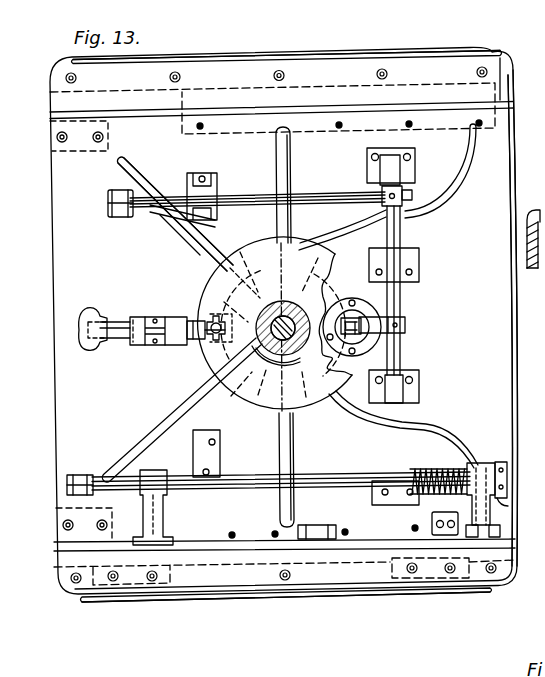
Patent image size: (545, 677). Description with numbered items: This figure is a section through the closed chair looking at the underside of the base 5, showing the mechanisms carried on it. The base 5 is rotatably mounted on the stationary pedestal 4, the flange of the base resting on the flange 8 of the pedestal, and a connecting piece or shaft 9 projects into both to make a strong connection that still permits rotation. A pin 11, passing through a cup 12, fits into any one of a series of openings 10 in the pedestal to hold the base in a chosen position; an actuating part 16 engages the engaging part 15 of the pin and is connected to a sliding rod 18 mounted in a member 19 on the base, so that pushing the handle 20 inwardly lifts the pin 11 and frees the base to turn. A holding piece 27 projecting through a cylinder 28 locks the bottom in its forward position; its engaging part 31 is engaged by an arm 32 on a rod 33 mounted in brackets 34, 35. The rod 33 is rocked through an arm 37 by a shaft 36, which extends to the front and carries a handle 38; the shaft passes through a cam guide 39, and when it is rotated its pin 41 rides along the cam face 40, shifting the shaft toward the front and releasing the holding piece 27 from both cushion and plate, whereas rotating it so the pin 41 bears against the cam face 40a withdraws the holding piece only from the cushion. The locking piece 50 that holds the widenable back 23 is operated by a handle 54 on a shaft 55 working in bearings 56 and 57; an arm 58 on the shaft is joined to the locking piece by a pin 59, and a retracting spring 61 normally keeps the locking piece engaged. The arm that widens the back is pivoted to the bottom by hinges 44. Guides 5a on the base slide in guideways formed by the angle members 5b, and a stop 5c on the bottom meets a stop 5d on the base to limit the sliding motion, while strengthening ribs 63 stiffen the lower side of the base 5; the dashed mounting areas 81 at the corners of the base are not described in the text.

The pedestal 4 is at (268, 302).
The base 5 is at (58, 404).
The guides 5a is at (352, 130).
The angle members 5b is at (316, 106).
The stop 5c is at (305, 539).
The stop 5d is at (450, 535).
The flange 8 is at (260, 410).
The connecting piece or shaft 9 is at (274, 300).
The openings 10 is at (238, 352).
The pin 11 is at (200, 341).
The cup 12 is at (212, 314).
The engaging part 15 is at (218, 343).
The actuating part 16 is at (196, 322).
The sliding rod 18 is at (113, 322).
The member 19 is at (133, 317).
The handle 20 is at (86, 320).
The back 23 is at (538, 210).
The holding piece 27 is at (340, 300).
The cylinder 28 is at (358, 322).
The engaging part 31 is at (356, 345).
The arm 32 is at (405, 323).
The rod 33 is at (372, 336).
The bracket 34 is at (420, 385).
The bracket 35 is at (408, 176).
The shaft 36 is at (242, 198).
The arm 37 is at (410, 213).
The handle 38 is at (110, 200).
The cam guide 39 is at (205, 190).
The cam face 40 is at (185, 196).
The cam face 40a is at (174, 241).
The pin 41 is at (168, 223).
The hinges 44 is at (138, 602).
The locking piece 50 is at (512, 500).
The handle 54 is at (80, 476).
The shaft 55 is at (230, 488).
The bearing 56 is at (163, 505).
The bearing 57 is at (478, 463).
The arm 58 is at (499, 462).
The pin 59 is at (505, 494).
The retracting spring 61 is at (412, 469).
The strengthening ribs 63 is at (123, 168).
The mounting plate 81 is at (66, 152).